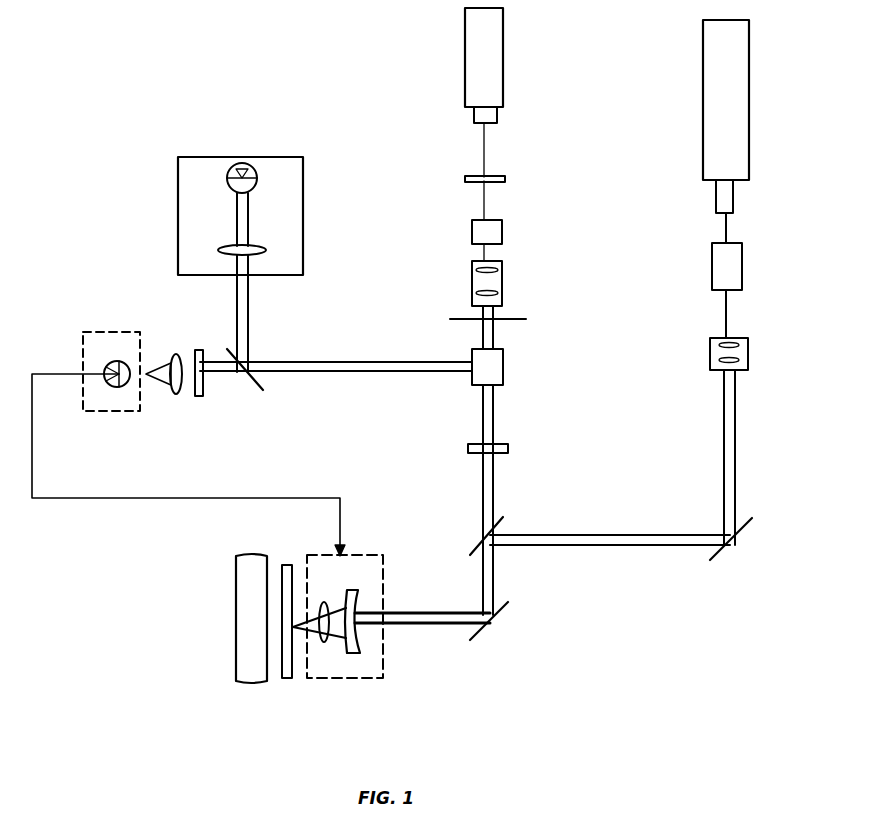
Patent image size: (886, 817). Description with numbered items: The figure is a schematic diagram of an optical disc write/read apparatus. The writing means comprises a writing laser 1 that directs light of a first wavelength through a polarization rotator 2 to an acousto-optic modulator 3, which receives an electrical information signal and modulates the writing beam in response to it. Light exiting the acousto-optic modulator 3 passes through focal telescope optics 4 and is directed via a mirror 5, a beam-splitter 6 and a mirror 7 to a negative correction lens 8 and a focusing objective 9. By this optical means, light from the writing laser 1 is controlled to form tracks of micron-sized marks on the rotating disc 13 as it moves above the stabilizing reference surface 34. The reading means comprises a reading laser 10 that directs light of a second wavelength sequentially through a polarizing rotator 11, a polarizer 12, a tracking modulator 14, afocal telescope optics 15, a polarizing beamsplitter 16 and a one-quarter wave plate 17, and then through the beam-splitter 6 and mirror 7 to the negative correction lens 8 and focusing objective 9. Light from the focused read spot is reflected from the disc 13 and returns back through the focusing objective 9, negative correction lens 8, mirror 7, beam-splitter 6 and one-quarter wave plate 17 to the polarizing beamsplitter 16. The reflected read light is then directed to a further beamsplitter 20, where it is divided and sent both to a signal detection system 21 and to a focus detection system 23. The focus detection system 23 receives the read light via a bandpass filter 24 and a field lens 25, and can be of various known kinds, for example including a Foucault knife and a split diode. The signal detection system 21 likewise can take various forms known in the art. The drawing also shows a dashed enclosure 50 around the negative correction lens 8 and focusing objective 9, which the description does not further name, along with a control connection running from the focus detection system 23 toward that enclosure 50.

The writing laser 1 is at (752, 90).
The polarization rotator 2 is at (727, 206).
The acousto-optic modulator 3 is at (742, 270).
The focal telescope optics 4 is at (748, 349).
The mirror 5 is at (742, 528).
The beam-splitter 6 is at (505, 521).
The mirror 7 is at (494, 621).
The negative correction lens 8 is at (355, 650).
The focusing objective 9 is at (326, 642).
The reading laser 10 is at (505, 38).
The polarizing rotator 11 is at (497, 117).
The polarizer 12 is at (505, 178).
The disc 13 is at (287, 565).
The tracking modulator 14 is at (500, 236).
The afocal telescope optics 15 is at (500, 291).
The polarizing beamsplitter 16 is at (503, 366).
The one-quarter wave plate 17 is at (508, 446).
The beamsplitter 20 is at (250, 384).
The signal detection system 21 is at (304, 186).
The focus detection system 23 is at (112, 329).
The bandpass filter 24 is at (203, 384).
The field lens 25 is at (174, 394).
The stabilizing reference surface 34 is at (232, 578).
The focusing head 50 is at (383, 640).